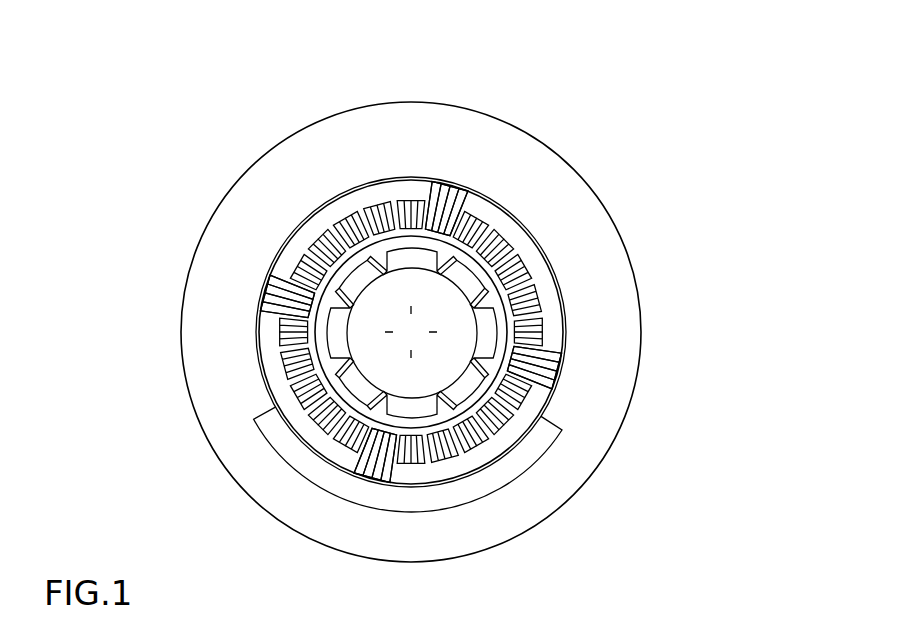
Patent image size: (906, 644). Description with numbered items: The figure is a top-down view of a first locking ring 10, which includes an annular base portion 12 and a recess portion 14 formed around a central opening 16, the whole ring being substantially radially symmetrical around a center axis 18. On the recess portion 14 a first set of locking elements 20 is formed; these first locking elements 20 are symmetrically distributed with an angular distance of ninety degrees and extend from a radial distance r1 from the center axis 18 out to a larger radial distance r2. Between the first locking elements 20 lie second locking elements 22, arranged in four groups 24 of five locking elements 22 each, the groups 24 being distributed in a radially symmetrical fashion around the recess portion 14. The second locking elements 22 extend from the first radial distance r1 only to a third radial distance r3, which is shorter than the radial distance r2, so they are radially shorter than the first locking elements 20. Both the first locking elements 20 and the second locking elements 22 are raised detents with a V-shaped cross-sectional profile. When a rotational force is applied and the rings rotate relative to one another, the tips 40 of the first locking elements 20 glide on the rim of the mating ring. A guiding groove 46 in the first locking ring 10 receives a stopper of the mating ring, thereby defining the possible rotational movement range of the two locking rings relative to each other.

The first locking ring 10 is at (700, 182).
The annular base portion 12 is at (575, 497).
The recess portion 14 is at (458, 417).
The central opening 16 is at (395, 363).
The center axis 18 is at (413, 335).
The first locking elements 20 is at (463, 197).
The second locking elements 22 is at (385, 205).
The groups 24 is at (304, 234).
The tips 40 is at (556, 373).
The guiding groove 46 is at (290, 462).
The first radial distance r1 is at (485, 263).
The second radial distance r2 is at (440, 188).
The third radial distance r3 is at (352, 222).